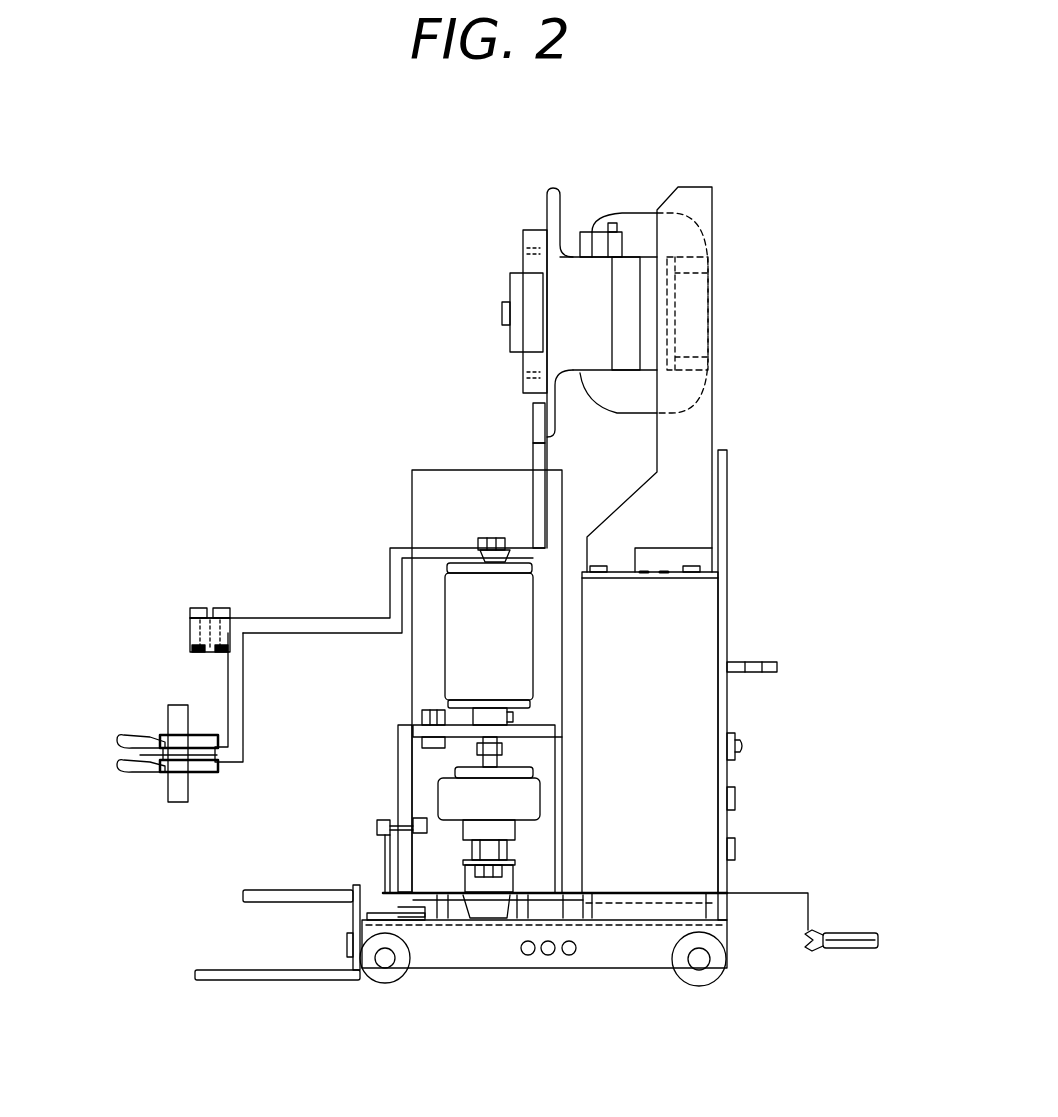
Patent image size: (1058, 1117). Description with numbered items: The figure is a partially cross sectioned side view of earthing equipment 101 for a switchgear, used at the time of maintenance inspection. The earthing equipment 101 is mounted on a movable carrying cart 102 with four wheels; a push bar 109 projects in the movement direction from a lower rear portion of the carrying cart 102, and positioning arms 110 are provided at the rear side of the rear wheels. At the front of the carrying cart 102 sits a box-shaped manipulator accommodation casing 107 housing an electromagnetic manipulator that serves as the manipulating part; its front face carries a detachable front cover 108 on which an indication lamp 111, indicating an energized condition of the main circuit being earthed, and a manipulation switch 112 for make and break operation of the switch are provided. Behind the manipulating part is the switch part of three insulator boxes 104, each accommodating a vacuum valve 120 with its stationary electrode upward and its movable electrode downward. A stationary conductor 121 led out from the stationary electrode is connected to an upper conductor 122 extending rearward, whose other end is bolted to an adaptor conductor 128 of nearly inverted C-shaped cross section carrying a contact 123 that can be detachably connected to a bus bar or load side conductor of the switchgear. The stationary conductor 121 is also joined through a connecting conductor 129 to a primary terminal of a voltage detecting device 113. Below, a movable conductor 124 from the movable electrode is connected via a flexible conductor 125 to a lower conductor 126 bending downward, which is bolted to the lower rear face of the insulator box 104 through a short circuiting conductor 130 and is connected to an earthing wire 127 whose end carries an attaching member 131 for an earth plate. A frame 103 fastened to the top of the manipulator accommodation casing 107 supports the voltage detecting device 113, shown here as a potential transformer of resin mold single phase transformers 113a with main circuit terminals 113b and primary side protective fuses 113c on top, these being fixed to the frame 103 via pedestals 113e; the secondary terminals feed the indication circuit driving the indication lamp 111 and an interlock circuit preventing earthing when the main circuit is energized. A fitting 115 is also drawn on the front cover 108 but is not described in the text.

The earthing equipment 101 is at (770, 170).
The carrying cart 102 is at (598, 955).
The frame 103 is at (693, 424).
The insulator box 104 is at (412, 485).
The manipulator accommodation casing 107 is at (702, 592).
The front cover 108 is at (727, 485).
The push bar 109 is at (243, 893).
The positioning arm 110 is at (265, 982).
The indication lamp 111 is at (743, 745).
The manipulation switch 112 is at (735, 798).
The voltage detecting device 113 is at (633, 213).
The single phase transformer 113a is at (543, 200).
The main circuit terminal 113b is at (533, 410).
The primary side protective fuse 113c is at (510, 290).
The pedestal 113e is at (690, 296).
The pin 115 is at (777, 667).
The vacuum valve 120 is at (445, 675).
The stationary conductor 121 is at (478, 542).
The upper conductor 122 is at (343, 618).
The contact 123 is at (120, 738).
The movable conductor 124 is at (478, 713).
The flexible conductor 125 is at (438, 790).
The lower conductor 126 is at (398, 755).
The earthing wire 127 is at (788, 893).
The adaptor conductor 128 is at (228, 675).
The connecting conductor 129 is at (533, 452).
The short circuiting conductor 130 is at (377, 826).
The attaching member 131 is at (843, 950).